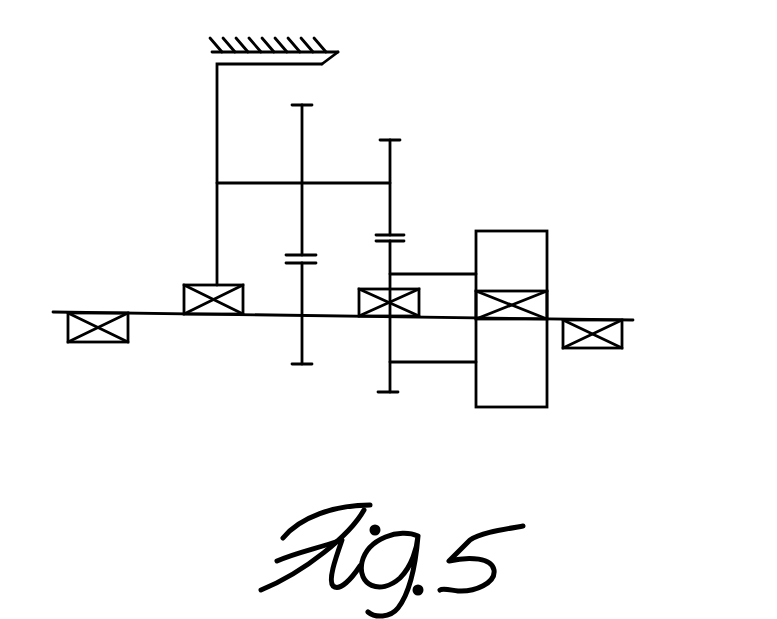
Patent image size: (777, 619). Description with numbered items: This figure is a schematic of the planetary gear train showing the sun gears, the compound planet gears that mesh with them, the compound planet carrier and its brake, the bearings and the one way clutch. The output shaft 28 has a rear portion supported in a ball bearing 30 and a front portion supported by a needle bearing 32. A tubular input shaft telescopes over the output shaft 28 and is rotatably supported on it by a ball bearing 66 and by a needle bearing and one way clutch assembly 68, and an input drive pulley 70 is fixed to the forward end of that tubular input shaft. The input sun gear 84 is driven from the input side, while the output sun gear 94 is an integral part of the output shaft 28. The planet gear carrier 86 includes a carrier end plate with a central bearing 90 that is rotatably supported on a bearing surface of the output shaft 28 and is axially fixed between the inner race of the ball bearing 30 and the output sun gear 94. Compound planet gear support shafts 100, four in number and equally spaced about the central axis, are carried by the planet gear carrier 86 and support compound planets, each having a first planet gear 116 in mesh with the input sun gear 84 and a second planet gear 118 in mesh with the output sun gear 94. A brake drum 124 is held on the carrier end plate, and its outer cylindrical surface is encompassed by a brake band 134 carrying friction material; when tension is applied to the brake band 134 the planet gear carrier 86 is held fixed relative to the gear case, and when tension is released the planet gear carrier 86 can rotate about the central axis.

The output shaft 28 is at (141, 313).
The ball bearing 30 is at (82, 336).
The needle bearing 32 is at (613, 336).
The ball bearing 66 is at (537, 303).
The needle bearing and one way clutch assembly 68 is at (375, 317).
The input drive pulley 70 is at (506, 246).
The input sun gear 84 is at (389, 374).
The planet gear carrier 86 is at (217, 105).
The central bearing 90 is at (199, 285).
The output sun gear 94 is at (300, 332).
The compound planet gear support shafts 100 is at (250, 183).
The first planet gear 116 is at (397, 160).
The second planet gear 118 is at (305, 140).
The brake drum 124 is at (334, 49).
The brake band 134 is at (212, 53).